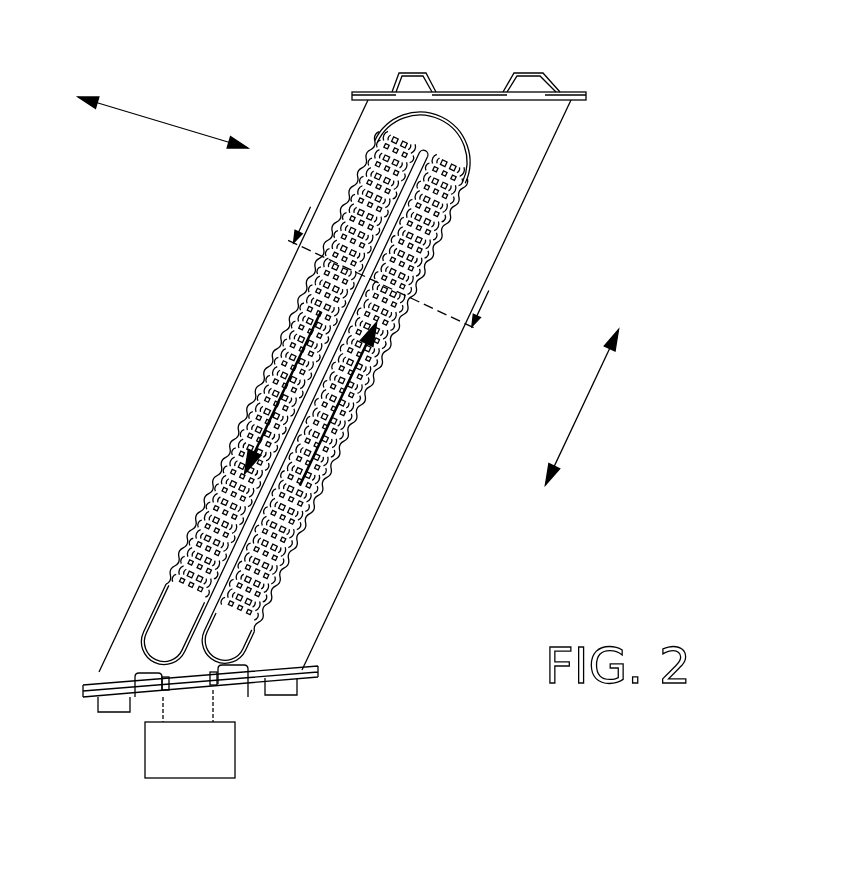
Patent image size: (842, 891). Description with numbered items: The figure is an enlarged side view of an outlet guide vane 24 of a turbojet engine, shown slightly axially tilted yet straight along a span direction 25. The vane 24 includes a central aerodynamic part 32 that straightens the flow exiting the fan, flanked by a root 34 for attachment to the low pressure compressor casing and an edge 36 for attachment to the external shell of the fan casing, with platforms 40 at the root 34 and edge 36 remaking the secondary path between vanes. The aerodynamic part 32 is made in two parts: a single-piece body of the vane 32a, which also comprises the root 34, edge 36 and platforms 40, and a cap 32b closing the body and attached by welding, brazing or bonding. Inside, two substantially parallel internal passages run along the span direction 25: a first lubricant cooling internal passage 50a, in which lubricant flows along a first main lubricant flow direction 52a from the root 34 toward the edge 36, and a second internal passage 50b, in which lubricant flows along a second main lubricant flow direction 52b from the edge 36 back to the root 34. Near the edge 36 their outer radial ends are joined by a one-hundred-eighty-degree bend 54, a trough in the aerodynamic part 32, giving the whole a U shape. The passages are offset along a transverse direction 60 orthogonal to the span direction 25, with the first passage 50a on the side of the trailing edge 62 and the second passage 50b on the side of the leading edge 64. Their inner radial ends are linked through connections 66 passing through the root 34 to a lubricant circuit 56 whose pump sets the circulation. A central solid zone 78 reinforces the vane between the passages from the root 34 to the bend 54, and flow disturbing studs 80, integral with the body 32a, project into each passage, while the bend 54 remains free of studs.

The outlet guide vane 24 is at (653, 248).
The span direction 25 is at (590, 396).
The aerodynamic part 32 is at (333, 385).
The body of the vane 32a is at (400, 411).
The cap 32b is at (246, 396).
The root 34 is at (285, 688).
The edge 36 is at (527, 92).
The platforms 40 is at (360, 103).
The first lubricant cooling internal passage 50a is at (283, 606).
The second internal passage for cooling lubricant 50b is at (173, 562).
The first main lubricant flow direction 52a is at (318, 464).
The second main lubricant flow direction 52b is at (283, 400).
The 180° bend 54 is at (448, 147).
The lubricant circuit 56 is at (213, 763).
The transverse direction 60 is at (162, 123).
The trailing edge 62 is at (527, 195).
The leading edge 64 is at (207, 447).
The connections 66 is at (135, 677).
The central solid zone 78 is at (437, 243).
The studs 80 is at (280, 572).